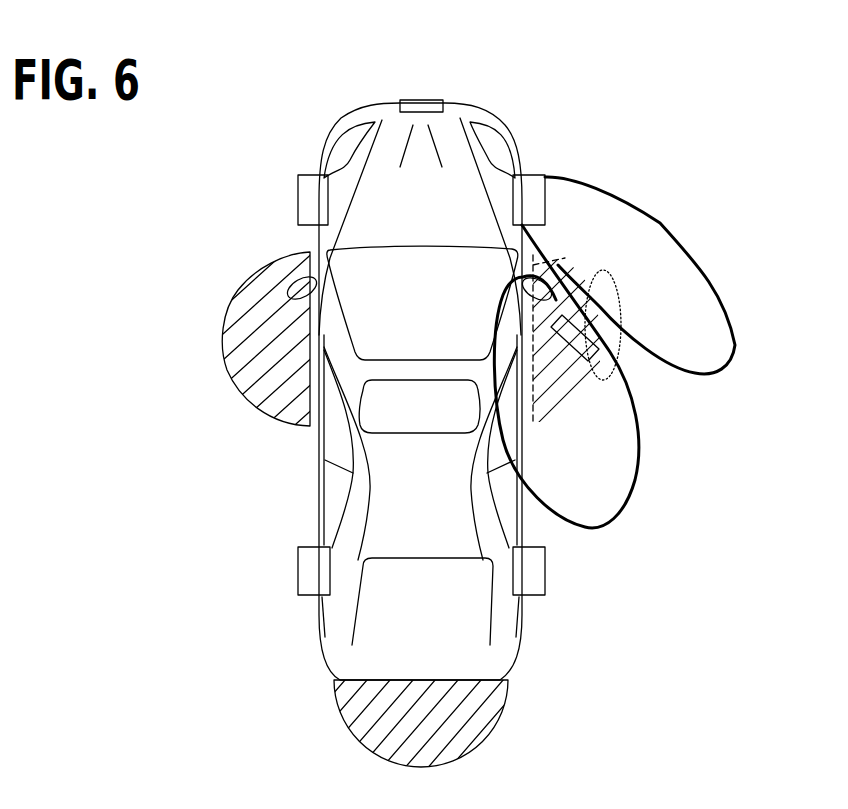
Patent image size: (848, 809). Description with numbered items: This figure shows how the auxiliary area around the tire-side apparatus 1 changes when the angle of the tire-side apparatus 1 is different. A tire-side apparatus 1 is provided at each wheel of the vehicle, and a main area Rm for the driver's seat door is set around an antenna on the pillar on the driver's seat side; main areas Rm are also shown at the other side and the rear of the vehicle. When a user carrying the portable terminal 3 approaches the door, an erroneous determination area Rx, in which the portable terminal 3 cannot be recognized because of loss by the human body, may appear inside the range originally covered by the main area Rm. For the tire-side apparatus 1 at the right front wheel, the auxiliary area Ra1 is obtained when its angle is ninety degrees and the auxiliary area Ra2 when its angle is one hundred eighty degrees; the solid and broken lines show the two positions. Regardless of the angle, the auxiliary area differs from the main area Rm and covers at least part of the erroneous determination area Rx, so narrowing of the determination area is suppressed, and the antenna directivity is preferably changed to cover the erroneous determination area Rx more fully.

The tire-side apparatus 1 is at (298, 176).
The main area Rm is at (265, 262).
The auxiliary area Ra1 is at (597, 183).
The auxiliary area Ra2 is at (638, 468).
The erroneous determination area Rx is at (612, 293).
The portable terminal 3 is at (612, 381).